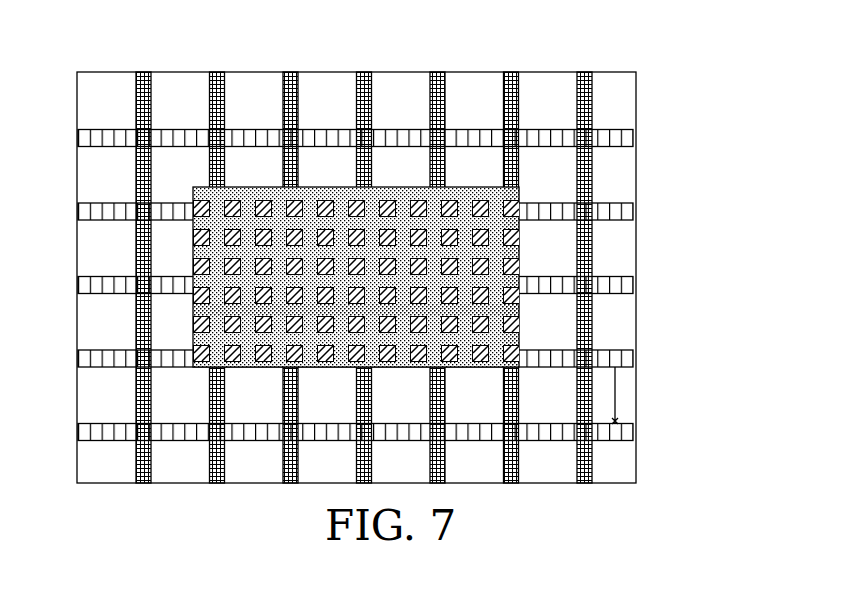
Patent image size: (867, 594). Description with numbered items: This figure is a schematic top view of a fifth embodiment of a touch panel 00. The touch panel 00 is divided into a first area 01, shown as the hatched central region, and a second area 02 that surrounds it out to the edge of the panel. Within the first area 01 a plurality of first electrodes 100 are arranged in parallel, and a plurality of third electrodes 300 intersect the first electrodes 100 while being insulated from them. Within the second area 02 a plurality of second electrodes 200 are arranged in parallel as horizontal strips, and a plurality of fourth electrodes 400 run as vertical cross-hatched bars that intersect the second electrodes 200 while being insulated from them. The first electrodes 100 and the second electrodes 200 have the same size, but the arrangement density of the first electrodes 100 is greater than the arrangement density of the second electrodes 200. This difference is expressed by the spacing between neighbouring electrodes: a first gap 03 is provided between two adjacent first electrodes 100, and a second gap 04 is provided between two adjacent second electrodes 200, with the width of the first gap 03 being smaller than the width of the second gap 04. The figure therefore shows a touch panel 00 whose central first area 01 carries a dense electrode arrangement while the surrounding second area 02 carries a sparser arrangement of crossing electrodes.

The touch panel 00 is at (104, 55).
The fourth electrodes 400 is at (432, 277).
The second electrodes 200 is at (612, 139).
The first electrodes 100 is at (514, 243).
The first area 01 is at (517, 256).
The first gap 03 is at (517, 312).
The third electrodes 300 is at (462, 277).
The second gap 04 is at (622, 394).
The second area 02 is at (606, 468).